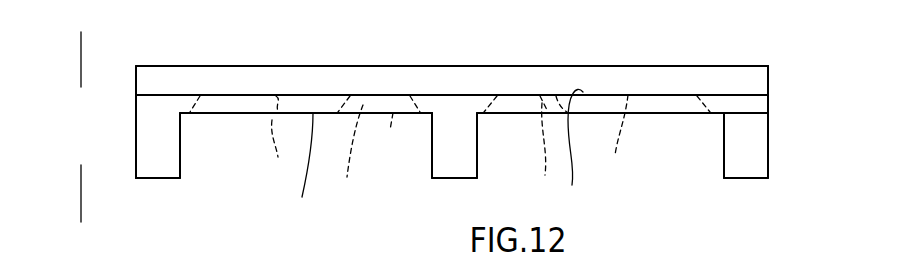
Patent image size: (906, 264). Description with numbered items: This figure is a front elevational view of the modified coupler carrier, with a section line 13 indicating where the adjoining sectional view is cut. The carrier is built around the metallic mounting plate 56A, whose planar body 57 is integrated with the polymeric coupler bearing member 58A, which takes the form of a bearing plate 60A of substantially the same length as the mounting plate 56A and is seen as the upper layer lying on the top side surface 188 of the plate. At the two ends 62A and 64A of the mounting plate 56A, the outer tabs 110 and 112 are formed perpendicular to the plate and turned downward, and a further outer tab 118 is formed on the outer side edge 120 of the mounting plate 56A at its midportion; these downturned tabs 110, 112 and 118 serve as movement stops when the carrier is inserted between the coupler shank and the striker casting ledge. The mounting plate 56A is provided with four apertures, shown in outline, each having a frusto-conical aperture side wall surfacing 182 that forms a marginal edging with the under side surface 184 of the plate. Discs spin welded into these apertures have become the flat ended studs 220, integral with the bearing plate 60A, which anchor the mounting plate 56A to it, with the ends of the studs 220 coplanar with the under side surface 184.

The section line 13- 13 is at (102, 32).
The planar body 57 is at (517, 100).
The polymeric coupler bearing member 58A is at (608, 75).
The bearing plate 60A is at (702, 75).
The end of mounting plate 64A is at (756, 103).
The end of mounting plate 62A is at (147, 123).
The outer tab 110 is at (167, 162).
The outer tab 112 is at (757, 164).
The outer tab 118 is at (468, 152).
The outer side edge 120 is at (673, 102).
The aperture side wall surfacing 182 is at (445, 140).
The under side surface 184 is at (294, 167).
The flat ended stud 220 is at (443, 154).
The mounting plate 56A is at (403, 137).
The top side surface 188 is at (588, 150).